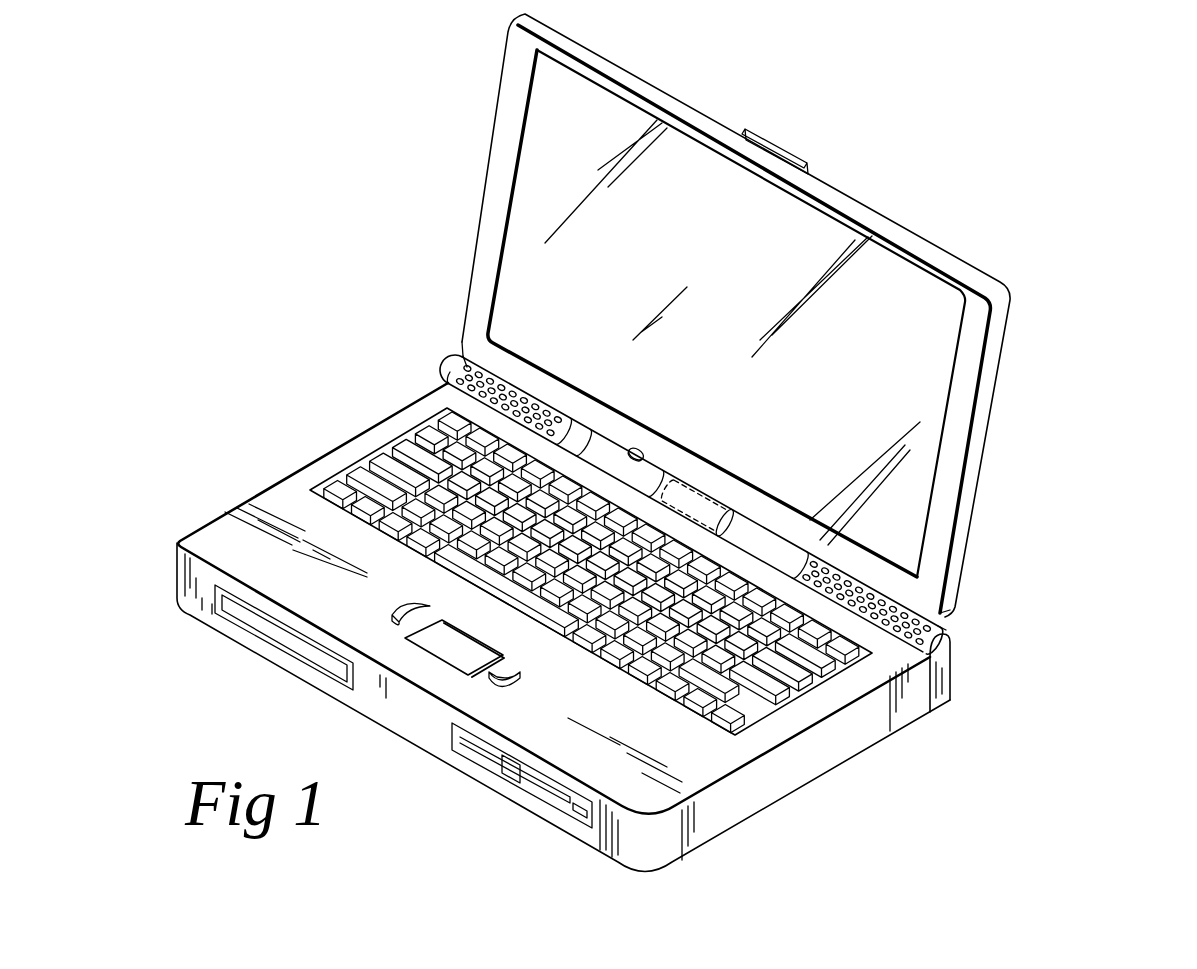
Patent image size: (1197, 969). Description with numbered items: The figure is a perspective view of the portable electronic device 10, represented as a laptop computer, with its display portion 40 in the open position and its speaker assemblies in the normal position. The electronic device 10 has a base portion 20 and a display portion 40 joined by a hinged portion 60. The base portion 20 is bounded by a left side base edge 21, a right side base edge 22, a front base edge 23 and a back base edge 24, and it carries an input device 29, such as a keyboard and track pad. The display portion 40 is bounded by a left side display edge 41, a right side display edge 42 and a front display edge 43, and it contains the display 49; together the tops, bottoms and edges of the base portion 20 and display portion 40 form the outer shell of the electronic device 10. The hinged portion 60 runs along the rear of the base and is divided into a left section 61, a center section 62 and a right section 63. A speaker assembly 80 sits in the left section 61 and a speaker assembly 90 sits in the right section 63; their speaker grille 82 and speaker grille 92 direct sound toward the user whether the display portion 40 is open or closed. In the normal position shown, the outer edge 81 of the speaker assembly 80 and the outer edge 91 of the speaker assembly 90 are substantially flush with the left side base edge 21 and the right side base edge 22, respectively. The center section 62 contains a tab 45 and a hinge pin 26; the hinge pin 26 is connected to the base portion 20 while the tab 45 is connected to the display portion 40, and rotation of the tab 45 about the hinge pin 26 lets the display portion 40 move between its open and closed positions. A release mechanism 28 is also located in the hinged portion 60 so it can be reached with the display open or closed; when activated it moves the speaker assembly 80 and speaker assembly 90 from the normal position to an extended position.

The electronic device 10 is at (1050, 363).
The base portion 20 is at (305, 462).
The left side base edge 21 is at (262, 492).
The right side base edge 22 is at (822, 768).
The front base edge 23 is at (385, 705).
The back base edge 24 is at (950, 672).
The hinge pin 26 is at (693, 497).
The release mechanism 28 is at (630, 450).
The input device 29 is at (385, 455).
The display portion 40 is at (478, 228).
The left side display edge 41 is at (483, 163).
The right side display edge 42 is at (975, 443).
The front display edge 43 is at (710, 122).
The tab 45 is at (706, 492).
The display 49 is at (669, 248).
The hinged portion 60 is at (947, 640).
The left section 61 is at (510, 393).
The center section 62 is at (658, 472).
The right section 63 is at (862, 598).
The speaker assembly 80 is at (463, 356).
The outer edge 81 is at (450, 378).
The speaker grille 82 is at (465, 365).
The speaker assembly 90 is at (918, 612).
The outer edge 91 is at (946, 683).
The speaker grille 92 is at (937, 626).